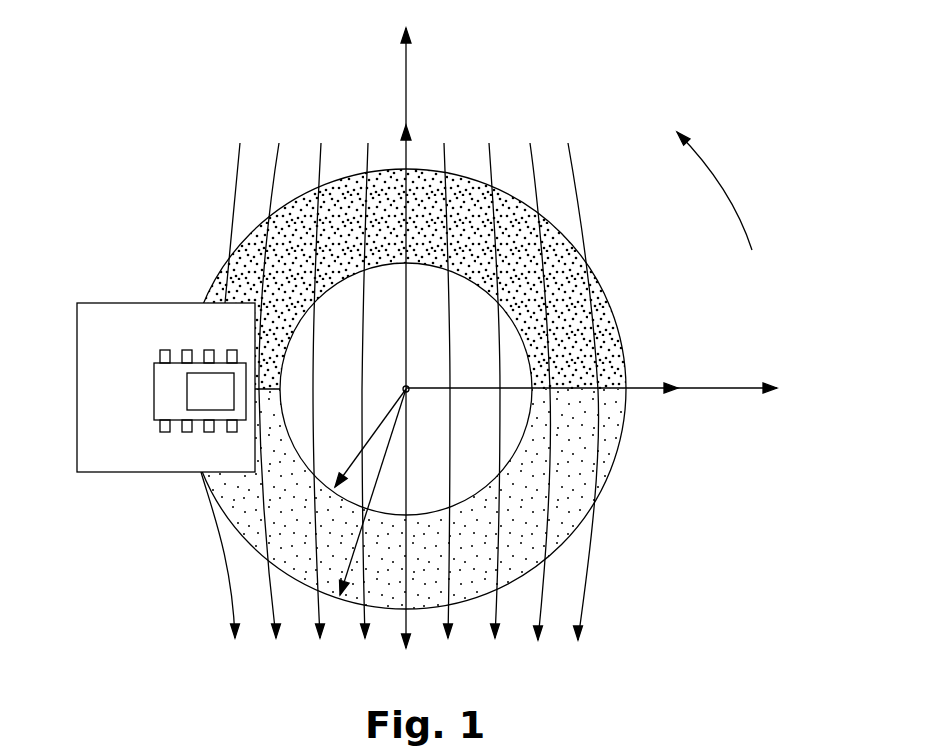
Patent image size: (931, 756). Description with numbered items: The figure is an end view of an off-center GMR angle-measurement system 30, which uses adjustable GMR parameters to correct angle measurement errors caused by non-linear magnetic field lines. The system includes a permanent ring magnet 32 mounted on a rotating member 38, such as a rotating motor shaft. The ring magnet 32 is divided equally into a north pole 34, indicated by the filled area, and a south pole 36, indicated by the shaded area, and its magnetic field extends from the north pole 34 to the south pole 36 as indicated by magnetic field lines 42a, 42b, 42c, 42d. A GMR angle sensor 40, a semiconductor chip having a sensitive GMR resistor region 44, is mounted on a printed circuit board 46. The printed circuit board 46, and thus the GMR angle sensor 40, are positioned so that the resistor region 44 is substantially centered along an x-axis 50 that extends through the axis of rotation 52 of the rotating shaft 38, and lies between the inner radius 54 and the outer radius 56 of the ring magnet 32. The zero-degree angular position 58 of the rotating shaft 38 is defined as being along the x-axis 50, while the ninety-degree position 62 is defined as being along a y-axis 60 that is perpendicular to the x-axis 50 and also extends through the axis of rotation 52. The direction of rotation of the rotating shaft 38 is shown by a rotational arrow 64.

The off-center GMR angle-measurement system 30 is at (650, 92).
The permanent ring magnet 32 is at (563, 227).
The north pole 34 is at (605, 357).
The south pole 36 is at (603, 470).
The rotating member 38 is at (510, 367).
The GMR angle sensor 40 is at (160, 372).
The magnetic field line 42a is at (238, 156).
The magnetic field line 42b is at (278, 156).
The magnetic field line 42c is at (366, 156).
The magnetic field line 42d is at (404, 140).
The GMR resistor region 44 is at (207, 393).
The printed circuit board 46 is at (98, 320).
The x-axis 50 is at (738, 390).
The axis of rotation 52 is at (404, 386).
The inner radius 54 is at (337, 428).
The outer radius 56 is at (350, 641).
The 0-degree angular position 58 is at (672, 432).
The y-axis 60 is at (407, 58).
The 90-degree position 62 is at (460, 118).
The rotational arrow 64 is at (723, 192).